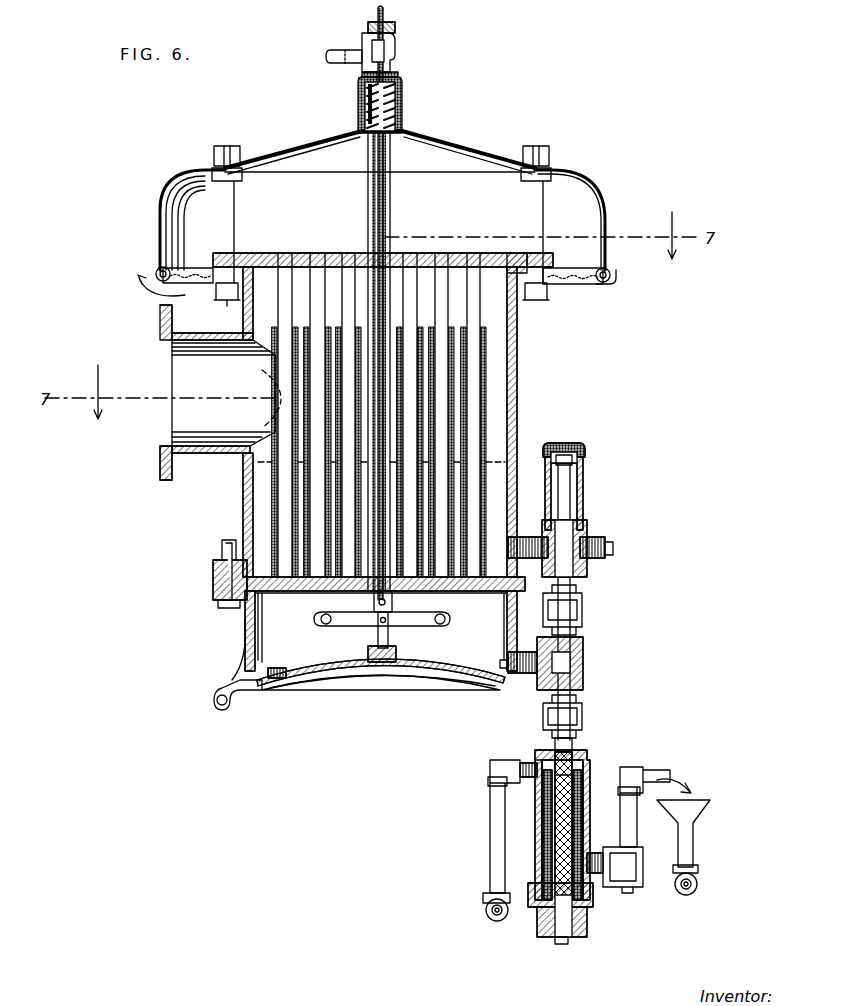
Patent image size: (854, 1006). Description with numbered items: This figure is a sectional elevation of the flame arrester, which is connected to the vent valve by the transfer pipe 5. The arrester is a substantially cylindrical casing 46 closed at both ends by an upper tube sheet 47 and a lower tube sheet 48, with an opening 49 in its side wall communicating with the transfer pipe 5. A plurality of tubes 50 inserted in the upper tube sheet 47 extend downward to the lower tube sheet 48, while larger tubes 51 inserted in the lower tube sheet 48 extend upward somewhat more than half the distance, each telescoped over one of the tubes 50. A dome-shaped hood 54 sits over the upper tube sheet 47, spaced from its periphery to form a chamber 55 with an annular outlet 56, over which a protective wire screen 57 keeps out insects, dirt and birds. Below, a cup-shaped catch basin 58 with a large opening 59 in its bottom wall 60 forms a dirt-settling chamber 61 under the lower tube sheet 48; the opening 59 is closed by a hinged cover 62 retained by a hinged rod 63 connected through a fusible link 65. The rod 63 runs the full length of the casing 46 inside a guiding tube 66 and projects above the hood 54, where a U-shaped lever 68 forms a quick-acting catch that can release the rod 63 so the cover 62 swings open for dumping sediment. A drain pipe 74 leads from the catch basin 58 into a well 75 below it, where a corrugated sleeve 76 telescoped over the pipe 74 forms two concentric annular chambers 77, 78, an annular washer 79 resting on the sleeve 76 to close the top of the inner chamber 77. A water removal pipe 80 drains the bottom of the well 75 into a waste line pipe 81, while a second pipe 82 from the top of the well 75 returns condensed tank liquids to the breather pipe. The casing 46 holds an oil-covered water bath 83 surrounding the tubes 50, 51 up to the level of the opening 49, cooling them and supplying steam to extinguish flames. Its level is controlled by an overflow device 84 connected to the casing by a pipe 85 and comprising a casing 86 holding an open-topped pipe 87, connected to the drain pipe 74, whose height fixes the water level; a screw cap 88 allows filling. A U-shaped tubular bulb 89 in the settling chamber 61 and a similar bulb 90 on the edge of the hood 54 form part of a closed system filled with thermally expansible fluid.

The transfer pipe 5 is at (194, 336).
The casing 46 is at (517, 365).
The upper tube sheet 47 is at (492, 252).
The lower tube sheet 48 is at (500, 590).
The opening 49 is at (246, 438).
The tubes 50 is at (446, 256).
The larger tubes 51 is at (442, 588).
The hood 54 is at (602, 185).
The chamber 55 is at (327, 221).
The annular outlet 56 is at (585, 285).
The protective wire screen 57 is at (573, 276).
The catch basin 58 is at (240, 622).
The opening 59 is at (285, 668).
The bottom wall 60 is at (275, 692).
The dirt-settling chamber 61 is at (413, 643).
The cover 62 is at (400, 680).
The hinged rod 63 is at (374, 603).
The fusible link 65 is at (390, 610).
The tube 66 is at (362, 262).
The U-shaped lever 68 is at (405, 46).
The drain pipe 74 is at (552, 698).
The well 75 is at (536, 830).
The corrugated sleeve 76 is at (586, 765).
The annular chamber 77 is at (580, 800).
The annular chamber 78 is at (592, 790).
The annular washer 79 is at (580, 728).
The water removal pipe 80 is at (637, 829).
The waste line pipe 81 is at (698, 882).
The second pipe 82 is at (490, 848).
The water bath 83 is at (510, 470).
The overflow device 84 is at (603, 496).
The pipe 85 is at (530, 535).
The casing 86 is at (585, 500).
The pipe 87 is at (571, 480).
The screw cap 88 is at (565, 443).
The U-shaped tubular bulb 89 is at (345, 628).
The bulb 90 is at (157, 268).